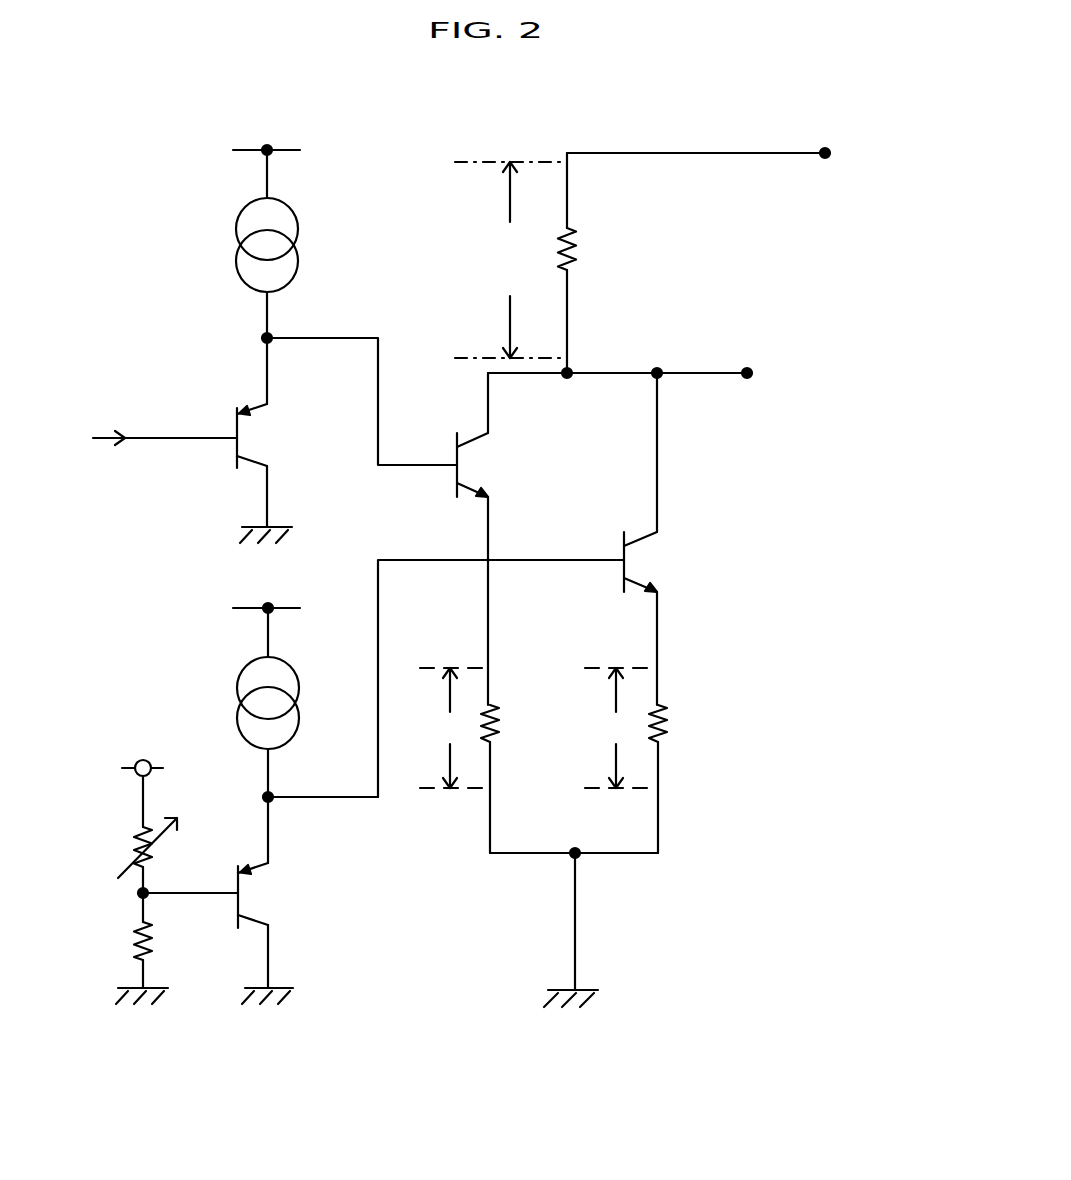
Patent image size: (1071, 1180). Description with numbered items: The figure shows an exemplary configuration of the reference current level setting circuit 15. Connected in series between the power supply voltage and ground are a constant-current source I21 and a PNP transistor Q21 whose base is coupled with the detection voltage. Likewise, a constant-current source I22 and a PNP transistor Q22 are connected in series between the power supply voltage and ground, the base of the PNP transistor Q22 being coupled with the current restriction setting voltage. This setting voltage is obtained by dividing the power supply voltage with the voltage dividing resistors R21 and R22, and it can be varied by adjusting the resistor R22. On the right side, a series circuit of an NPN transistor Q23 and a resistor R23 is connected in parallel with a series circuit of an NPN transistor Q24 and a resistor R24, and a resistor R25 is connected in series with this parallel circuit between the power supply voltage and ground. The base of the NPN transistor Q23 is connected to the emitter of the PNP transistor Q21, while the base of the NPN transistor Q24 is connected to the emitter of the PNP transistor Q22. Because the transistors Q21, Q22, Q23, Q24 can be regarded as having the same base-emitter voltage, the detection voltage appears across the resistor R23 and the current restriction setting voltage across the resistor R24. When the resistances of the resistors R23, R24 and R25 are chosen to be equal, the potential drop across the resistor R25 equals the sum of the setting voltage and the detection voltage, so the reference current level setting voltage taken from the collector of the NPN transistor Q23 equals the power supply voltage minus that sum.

The reference current level setting circuit 15 is at (112, 206).
The PNP transistor Q21 is at (273, 465).
The PNP transistor Q22 is at (274, 925).
The NPN transistor Q23 is at (494, 539).
The NPN transistor Q24 is at (665, 539).
The voltage dividing resistor R21 is at (116, 941).
The voltage dividing resistor R22 is at (128, 848).
The resistor R23 is at (517, 779).
The resistor R24 is at (686, 779).
The resistor R25 is at (597, 263).
The constant-current source I21 is at (301, 232).
The constant-current source I22 is at (302, 690).